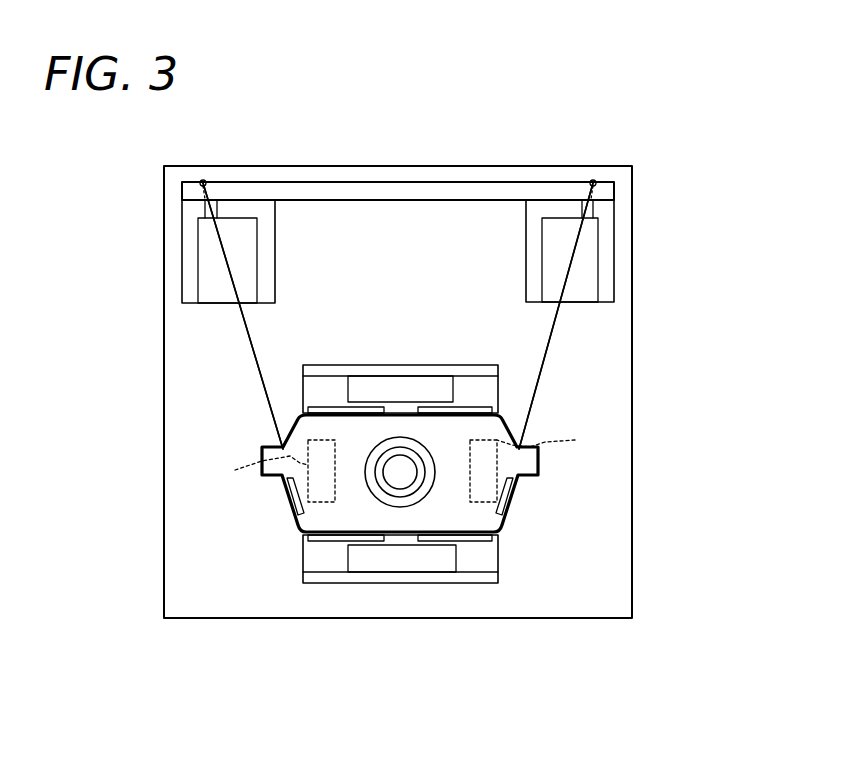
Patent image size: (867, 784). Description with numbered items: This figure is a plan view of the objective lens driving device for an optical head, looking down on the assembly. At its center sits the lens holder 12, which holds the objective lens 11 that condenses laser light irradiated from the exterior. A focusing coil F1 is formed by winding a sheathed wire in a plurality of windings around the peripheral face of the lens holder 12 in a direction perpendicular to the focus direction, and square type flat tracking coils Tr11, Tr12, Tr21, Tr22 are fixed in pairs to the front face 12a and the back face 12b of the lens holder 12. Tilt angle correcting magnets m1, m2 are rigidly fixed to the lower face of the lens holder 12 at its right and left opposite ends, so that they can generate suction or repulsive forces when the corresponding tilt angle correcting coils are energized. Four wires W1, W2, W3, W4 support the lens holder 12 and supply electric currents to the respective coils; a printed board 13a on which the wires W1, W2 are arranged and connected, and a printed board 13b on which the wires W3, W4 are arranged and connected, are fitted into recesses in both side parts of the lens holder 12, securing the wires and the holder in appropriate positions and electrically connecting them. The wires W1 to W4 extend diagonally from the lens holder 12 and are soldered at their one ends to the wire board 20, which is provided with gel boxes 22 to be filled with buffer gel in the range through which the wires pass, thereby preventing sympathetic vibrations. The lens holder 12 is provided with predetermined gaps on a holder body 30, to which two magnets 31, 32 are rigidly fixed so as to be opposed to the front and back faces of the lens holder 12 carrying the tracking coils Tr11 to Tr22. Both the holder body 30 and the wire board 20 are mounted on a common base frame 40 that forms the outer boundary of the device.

The wire board 20 is at (388, 182).
The base frame 40 is at (543, 166).
The gel box 22 is at (183, 222).
The holder body 30 is at (487, 365).
The magnet 31 is at (433, 562).
The magnet 32 is at (392, 382).
The tracking coil Tr21 is at (320, 405).
The tracking coil Tr22 is at (448, 405).
The tracking coil Tr11 is at (317, 541).
The tracking coil Tr12 is at (480, 541).
The objective lens 11 is at (403, 468).
The lens holder 12 is at (341, 518).
The front face 12a is at (442, 530).
The back face 12b is at (337, 408).
The printed board 13a is at (514, 493).
The printed board 13b is at (288, 491).
The tilt angle correcting magnet m1 is at (555, 437).
The tilt angle correcting magnet m2 is at (254, 469).
The wire W1 is at (545, 373).
The wire W2 is at (569, 316).
The wire W3 is at (258, 388).
The wire W4 is at (234, 316).
The focusing coil F1 is at (398, 534).